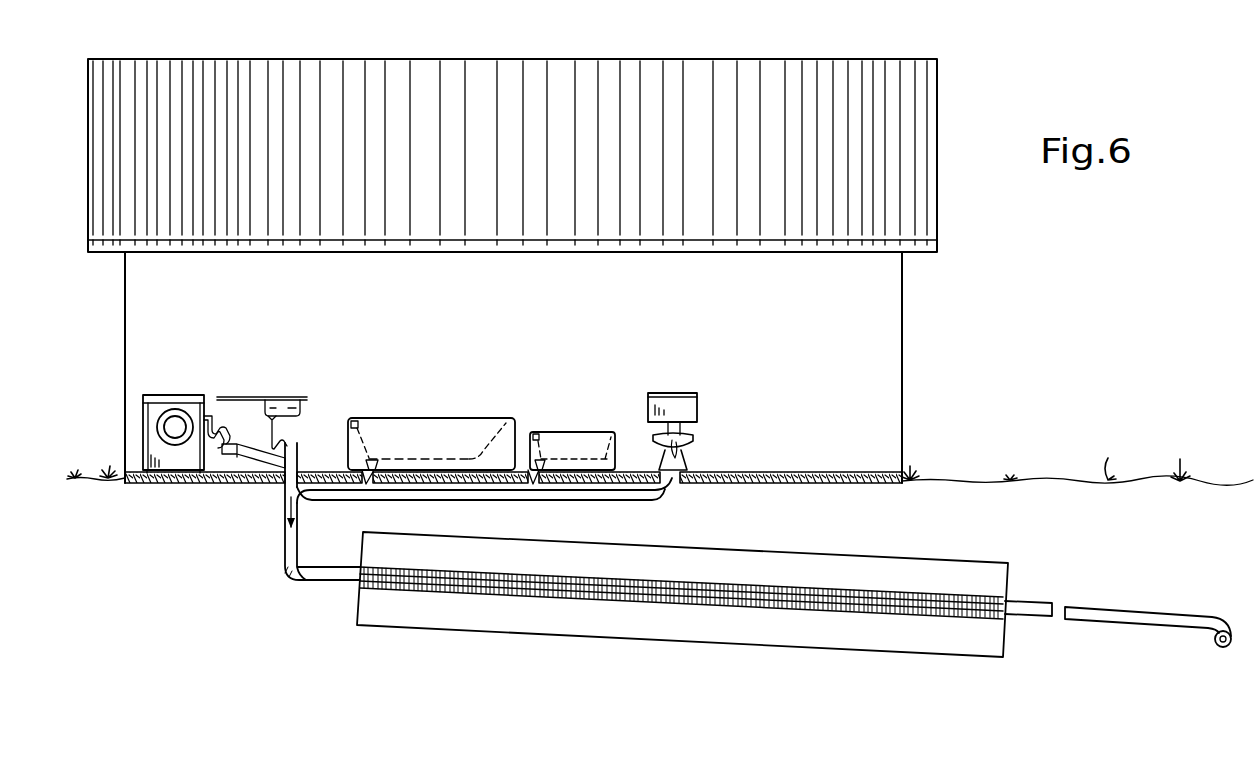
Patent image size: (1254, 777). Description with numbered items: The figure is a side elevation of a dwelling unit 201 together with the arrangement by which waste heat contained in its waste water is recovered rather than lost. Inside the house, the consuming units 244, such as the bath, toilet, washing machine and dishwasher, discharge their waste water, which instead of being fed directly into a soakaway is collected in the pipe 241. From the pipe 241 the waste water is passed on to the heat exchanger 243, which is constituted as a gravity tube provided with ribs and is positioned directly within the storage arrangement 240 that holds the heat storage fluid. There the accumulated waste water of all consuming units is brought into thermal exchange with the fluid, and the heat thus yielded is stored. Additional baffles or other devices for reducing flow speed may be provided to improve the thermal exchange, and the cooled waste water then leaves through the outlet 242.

The dwelling unit 201 is at (953, 116).
The waste water sources (washing machine, sink, bathtub, shower, toilet) 244 is at (323, 392).
The pipe 241 is at (285, 543).
The drainage/filter bed 240 is at (497, 622).
The heat exchanger 243 is at (440, 592).
The outlet pipe 242 is at (1216, 647).